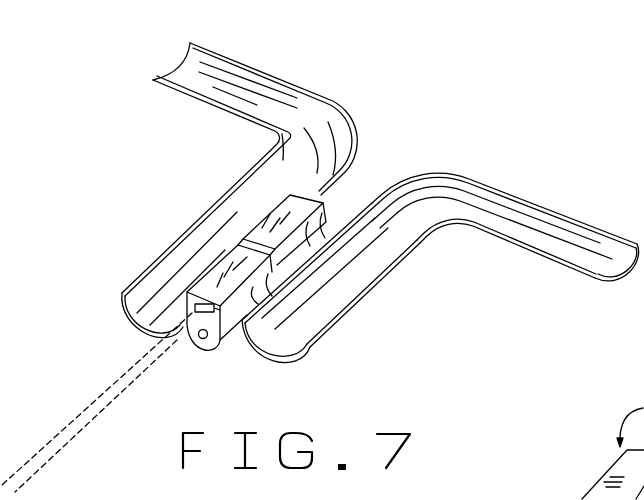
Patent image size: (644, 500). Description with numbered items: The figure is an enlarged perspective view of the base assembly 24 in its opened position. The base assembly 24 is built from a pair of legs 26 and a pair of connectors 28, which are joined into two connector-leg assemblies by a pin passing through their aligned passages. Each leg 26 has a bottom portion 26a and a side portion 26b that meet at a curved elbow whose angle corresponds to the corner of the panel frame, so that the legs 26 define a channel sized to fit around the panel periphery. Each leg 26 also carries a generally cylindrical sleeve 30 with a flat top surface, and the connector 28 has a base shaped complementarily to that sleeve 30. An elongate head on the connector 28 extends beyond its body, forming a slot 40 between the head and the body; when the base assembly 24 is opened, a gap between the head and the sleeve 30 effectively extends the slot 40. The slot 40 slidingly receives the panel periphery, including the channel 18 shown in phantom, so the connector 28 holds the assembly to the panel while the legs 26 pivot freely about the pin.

The channel 18 is at (98, 416).
The base assembly 24 is at (378, 184).
The leg 26 is at (378, 184).
The bottom portion 26a is at (189, 230).
The side portion 26b is at (222, 113).
The connector 28 is at (329, 212).
The sleeve 30 is at (388, 188).
The slot 40 is at (565, 499).